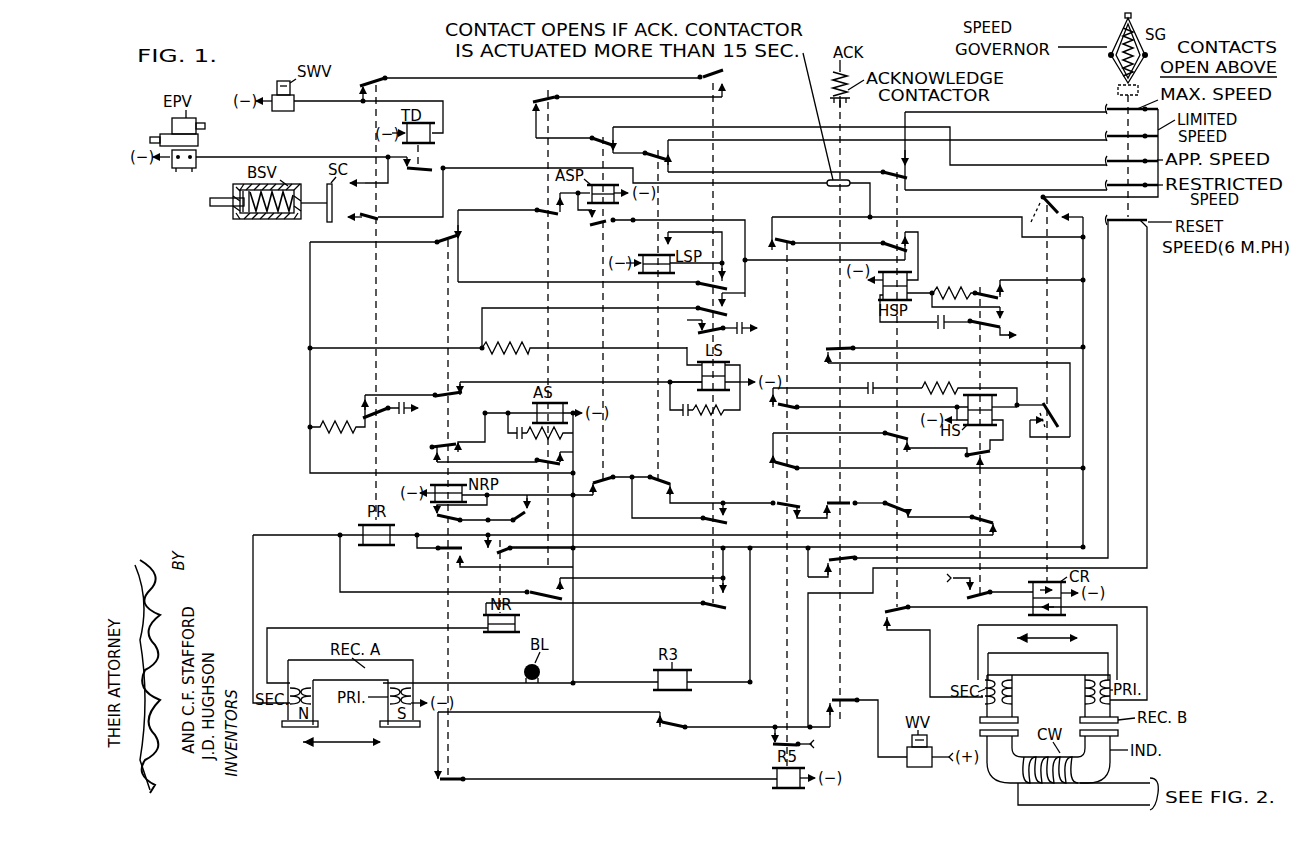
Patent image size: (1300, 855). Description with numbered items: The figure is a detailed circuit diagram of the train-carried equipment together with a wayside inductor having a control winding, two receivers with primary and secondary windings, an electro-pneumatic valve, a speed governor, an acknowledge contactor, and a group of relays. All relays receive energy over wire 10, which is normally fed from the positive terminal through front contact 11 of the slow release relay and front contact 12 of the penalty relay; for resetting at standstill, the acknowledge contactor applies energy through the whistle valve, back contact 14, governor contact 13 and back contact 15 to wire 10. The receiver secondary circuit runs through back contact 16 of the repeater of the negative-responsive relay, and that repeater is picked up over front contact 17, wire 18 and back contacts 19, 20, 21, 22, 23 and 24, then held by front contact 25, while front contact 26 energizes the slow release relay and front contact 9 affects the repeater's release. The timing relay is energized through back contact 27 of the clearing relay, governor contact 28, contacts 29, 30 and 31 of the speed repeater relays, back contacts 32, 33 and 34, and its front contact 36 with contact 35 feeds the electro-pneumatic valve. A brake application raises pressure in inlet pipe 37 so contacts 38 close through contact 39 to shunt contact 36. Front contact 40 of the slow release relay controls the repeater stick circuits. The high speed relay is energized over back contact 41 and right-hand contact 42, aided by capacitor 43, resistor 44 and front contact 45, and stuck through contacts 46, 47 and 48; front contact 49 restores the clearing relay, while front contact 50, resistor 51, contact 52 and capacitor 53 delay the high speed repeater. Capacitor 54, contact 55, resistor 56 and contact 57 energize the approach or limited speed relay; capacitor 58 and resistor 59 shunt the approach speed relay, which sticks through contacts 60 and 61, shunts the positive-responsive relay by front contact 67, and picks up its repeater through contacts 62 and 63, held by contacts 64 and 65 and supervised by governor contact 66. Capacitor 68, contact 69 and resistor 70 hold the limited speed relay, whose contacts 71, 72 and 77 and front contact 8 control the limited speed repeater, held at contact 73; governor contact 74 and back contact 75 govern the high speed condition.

The front contact of relay LS 8 is at (606, 590).
The front contact of relay NR 9 is at (525, 511).
The wire 10 is at (937, 218).
The front contact of relay R5 11 is at (772, 745).
The front contact of relay R3 12 is at (680, 729).
The speed governor contact 13 is at (977, 471).
The back contact of acknowledge contactor 14 is at (848, 705).
The back contact of acknowledge contactor 15 is at (844, 563).
The back contact of relay NRP 16 is at (440, 551).
The front contact of relay NR 17 is at (506, 551).
The wire 18 is at (620, 533).
The back contact of relay HS 19 is at (983, 517).
The back contact of relay HSP 20 is at (893, 502).
The back contact of acknowledge contactor 21 is at (856, 515).
The back contact of relay R5 22 is at (777, 502).
The back contact of relay LSP 23 is at (706, 491).
The back contact of relay ASP 24 is at (621, 491).
The front contact of relay NRP 25 is at (435, 518).
The front contact of relay NRP 26 is at (452, 781).
The back contact of relay CR 27 is at (1040, 201).
The speed governor contact 28 is at (1132, 176).
The contact of relay HSP 29 is at (886, 170).
The contact of relay LSP 30 is at (658, 152).
The contact of relay ASP 31 is at (592, 140).
The back contact of relay AS 32 is at (540, 97).
The back contact of relay LS 33 is at (721, 84).
The back contact of relay PR 34 is at (380, 76).
The contact of acknowledge contactor 35 is at (830, 188).
The front contact of relay TD 36 is at (426, 173).
The inlet pipe 37 is at (222, 209).
The contacts of brake suppression valve 38 is at (373, 215).
The contact on cylinder of brake suppression valve 39 is at (324, 213).
The front contact of relay R5 40 is at (827, 233).
The back contact of acknowledge contactor 41 is at (840, 348).
The right-hand contact of relay CR 42 is at (1043, 410).
The capacitor 43 is at (870, 385).
The limiting resistor 44 is at (932, 386).
The front contact of relay R5 45 is at (790, 409).
The front contact of relay R5 46 is at (928, 452).
The back contact of relay HSP 47 is at (888, 436).
The front contact of relay HS 48 is at (966, 454).
The front contact of relay HS 49 is at (987, 595).
The front contact of relay HS 50 is at (981, 290).
The resistor 51 is at (952, 290).
The contact of relay HS 52 is at (975, 325).
The capacitor 53 is at (937, 329).
The capacitor 54 is at (388, 412).
The contact of relay PR 55 is at (373, 415).
The current limiting resistor 56 is at (337, 422).
The contact of relay NRP 57 is at (443, 393).
The capacitor 58 is at (514, 436).
The limiting resistor 59 is at (557, 433).
The front contact of relay AS 60 is at (545, 458).
The back contact of relay NRP 61 is at (448, 447).
The contact of relay NRP 62 is at (450, 240).
The front contact of relay AS 63 is at (537, 213).
The back contact of relay HSP 64 is at (888, 242).
The front contact of relay ASP 65 is at (663, 245).
The speed governor contact 66 is at (1132, 153).
The front contact of relay AS 67 is at (540, 592).
The capacitor 68 is at (760, 338).
The contact of relay LS 69 is at (712, 328).
The current limiting resistor 70 is at (512, 345).
The front contact of relay LS 71 is at (704, 280).
The front contact of relay LS 72 is at (705, 306).
The front contact of relay LSP / speed governor contact 73 is at (1132, 126).
The speed governor contact 74 is at (1108, 104).
The back contact of relay HSP 75 is at (906, 609).
The front contact of relay LS 77 is at (727, 522).